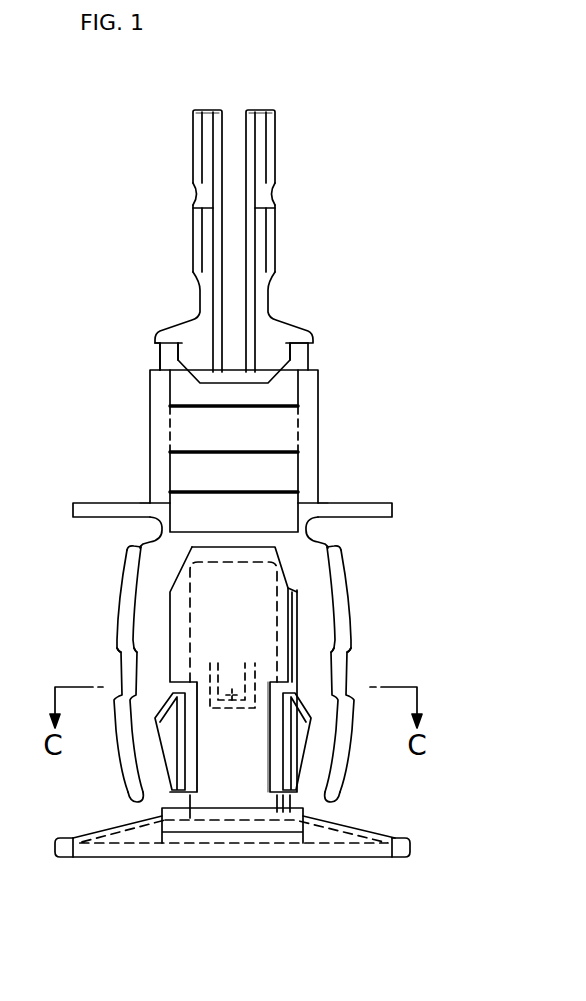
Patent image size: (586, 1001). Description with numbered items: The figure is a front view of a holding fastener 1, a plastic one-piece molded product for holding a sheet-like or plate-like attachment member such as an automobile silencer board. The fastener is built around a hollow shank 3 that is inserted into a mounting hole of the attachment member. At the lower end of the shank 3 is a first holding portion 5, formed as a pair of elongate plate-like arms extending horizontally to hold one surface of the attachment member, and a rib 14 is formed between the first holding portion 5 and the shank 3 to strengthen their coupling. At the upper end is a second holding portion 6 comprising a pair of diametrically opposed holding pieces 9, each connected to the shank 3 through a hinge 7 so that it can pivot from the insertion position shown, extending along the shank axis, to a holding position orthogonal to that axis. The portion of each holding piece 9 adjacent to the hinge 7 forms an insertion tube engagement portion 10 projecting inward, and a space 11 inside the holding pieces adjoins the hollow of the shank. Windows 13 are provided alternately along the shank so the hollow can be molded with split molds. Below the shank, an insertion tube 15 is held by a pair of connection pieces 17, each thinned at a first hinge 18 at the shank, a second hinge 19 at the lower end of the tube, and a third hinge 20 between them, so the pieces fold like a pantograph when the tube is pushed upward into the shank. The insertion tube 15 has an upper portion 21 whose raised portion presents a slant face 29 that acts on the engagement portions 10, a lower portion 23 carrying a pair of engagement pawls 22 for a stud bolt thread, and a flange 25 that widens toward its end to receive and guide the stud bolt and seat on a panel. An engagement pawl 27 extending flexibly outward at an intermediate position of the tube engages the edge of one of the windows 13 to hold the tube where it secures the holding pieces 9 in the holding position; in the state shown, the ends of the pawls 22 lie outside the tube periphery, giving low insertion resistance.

The holding fastener 1 is at (405, 291).
The shank 3 is at (300, 413).
The first holding portion 5 is at (98, 510).
The second holding portion 6 is at (315, 110).
The hinge 7 is at (172, 372).
The holding piece 9 is at (207, 130).
The insertion tube engagement portion 10 is at (168, 362).
The space 11 is at (210, 163).
The window 13 is at (205, 452).
The rib 14 is at (147, 500).
The insertion tube 15 is at (298, 620).
The connection piece 17 is at (126, 613).
The first hinge 18 is at (143, 534).
The second hinge 19 is at (145, 805).
The third hinge 20 is at (119, 678).
The upper portion 21 is at (287, 640).
The engagement pawl 22 is at (170, 757).
The lower portion 23 is at (257, 772).
The flange 25 is at (136, 848).
The engagement pawl 27 is at (229, 712).
The slant face 29 is at (171, 574).